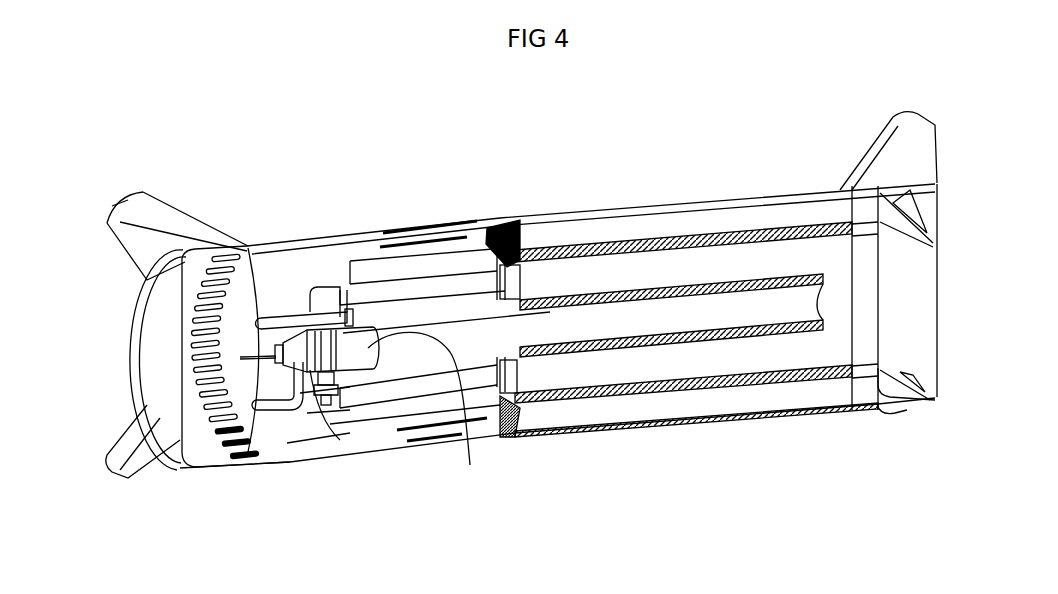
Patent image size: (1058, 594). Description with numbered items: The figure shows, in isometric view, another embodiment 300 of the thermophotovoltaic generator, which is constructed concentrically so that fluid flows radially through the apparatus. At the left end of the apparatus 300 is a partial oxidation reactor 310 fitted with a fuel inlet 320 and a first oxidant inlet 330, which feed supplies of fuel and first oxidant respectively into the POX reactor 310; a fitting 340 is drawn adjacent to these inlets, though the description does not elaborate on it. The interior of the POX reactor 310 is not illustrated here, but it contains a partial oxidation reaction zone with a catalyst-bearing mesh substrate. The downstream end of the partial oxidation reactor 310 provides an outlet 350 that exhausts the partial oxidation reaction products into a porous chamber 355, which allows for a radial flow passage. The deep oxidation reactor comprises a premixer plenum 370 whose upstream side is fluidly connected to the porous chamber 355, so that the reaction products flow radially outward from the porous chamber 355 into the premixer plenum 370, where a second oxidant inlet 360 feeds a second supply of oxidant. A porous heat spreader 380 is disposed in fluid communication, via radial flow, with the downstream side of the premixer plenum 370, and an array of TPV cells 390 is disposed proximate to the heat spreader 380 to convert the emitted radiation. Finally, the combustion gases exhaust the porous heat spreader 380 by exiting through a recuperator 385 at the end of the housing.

The thermophotovoltaic generator 300 is at (660, 113).
The partial oxidation reactor 310 is at (355, 355).
The fuel inlet 320 is at (226, 362).
The first oxidant inlet 330 is at (252, 414).
The valve fitting 340 is at (314, 378).
The outlet 350 is at (447, 348).
The porous chamber 355 is at (560, 330).
The second oxidant inlet 360 is at (266, 314).
The premixer plenum 370 is at (677, 342).
The porous heat spreader 380 is at (745, 263).
The recuperator 385 is at (505, 213).
The array of TPV cells 390 is at (578, 250).